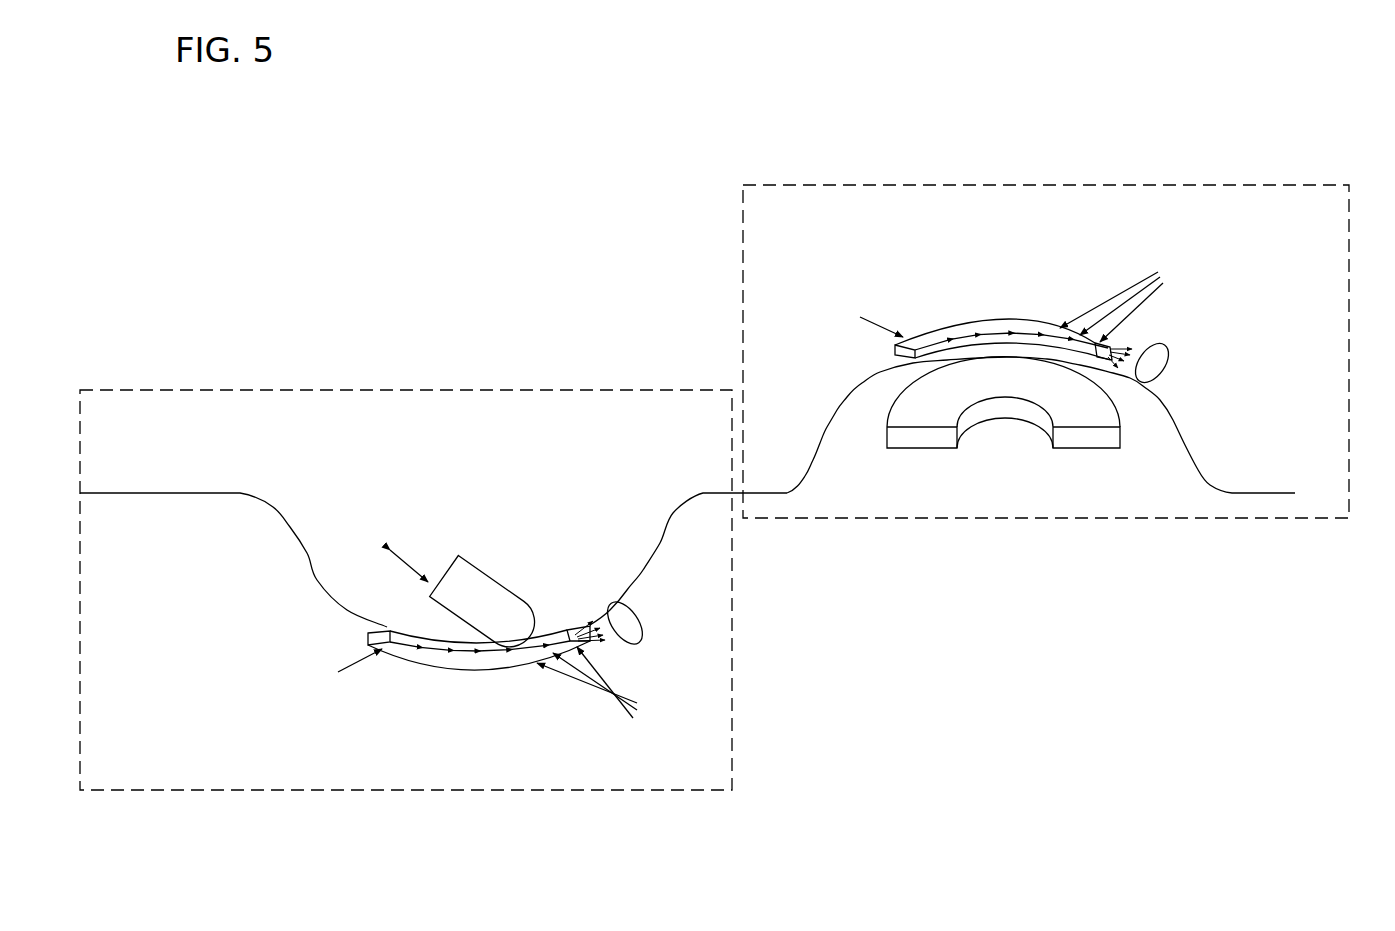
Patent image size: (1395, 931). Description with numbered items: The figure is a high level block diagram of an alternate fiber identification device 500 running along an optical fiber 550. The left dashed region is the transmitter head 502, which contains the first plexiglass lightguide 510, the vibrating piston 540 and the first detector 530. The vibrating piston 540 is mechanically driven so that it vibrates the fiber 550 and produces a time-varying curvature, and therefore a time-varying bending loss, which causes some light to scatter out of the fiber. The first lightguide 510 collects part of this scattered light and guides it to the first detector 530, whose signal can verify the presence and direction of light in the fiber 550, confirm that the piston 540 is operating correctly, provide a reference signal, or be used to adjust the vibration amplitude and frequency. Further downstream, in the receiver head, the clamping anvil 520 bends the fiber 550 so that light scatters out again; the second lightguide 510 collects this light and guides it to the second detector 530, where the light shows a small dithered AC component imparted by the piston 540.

The fiber identification device 500 is at (727, 469).
The transmitter head 502 is at (323, 390).
The plexiglass lightguide 510 is at (452, 676).
The clamping anvil 520 is at (993, 390).
The detector 530 is at (640, 612).
The vibrating piston 540 is at (493, 577).
The optical fiber 550 is at (215, 495).